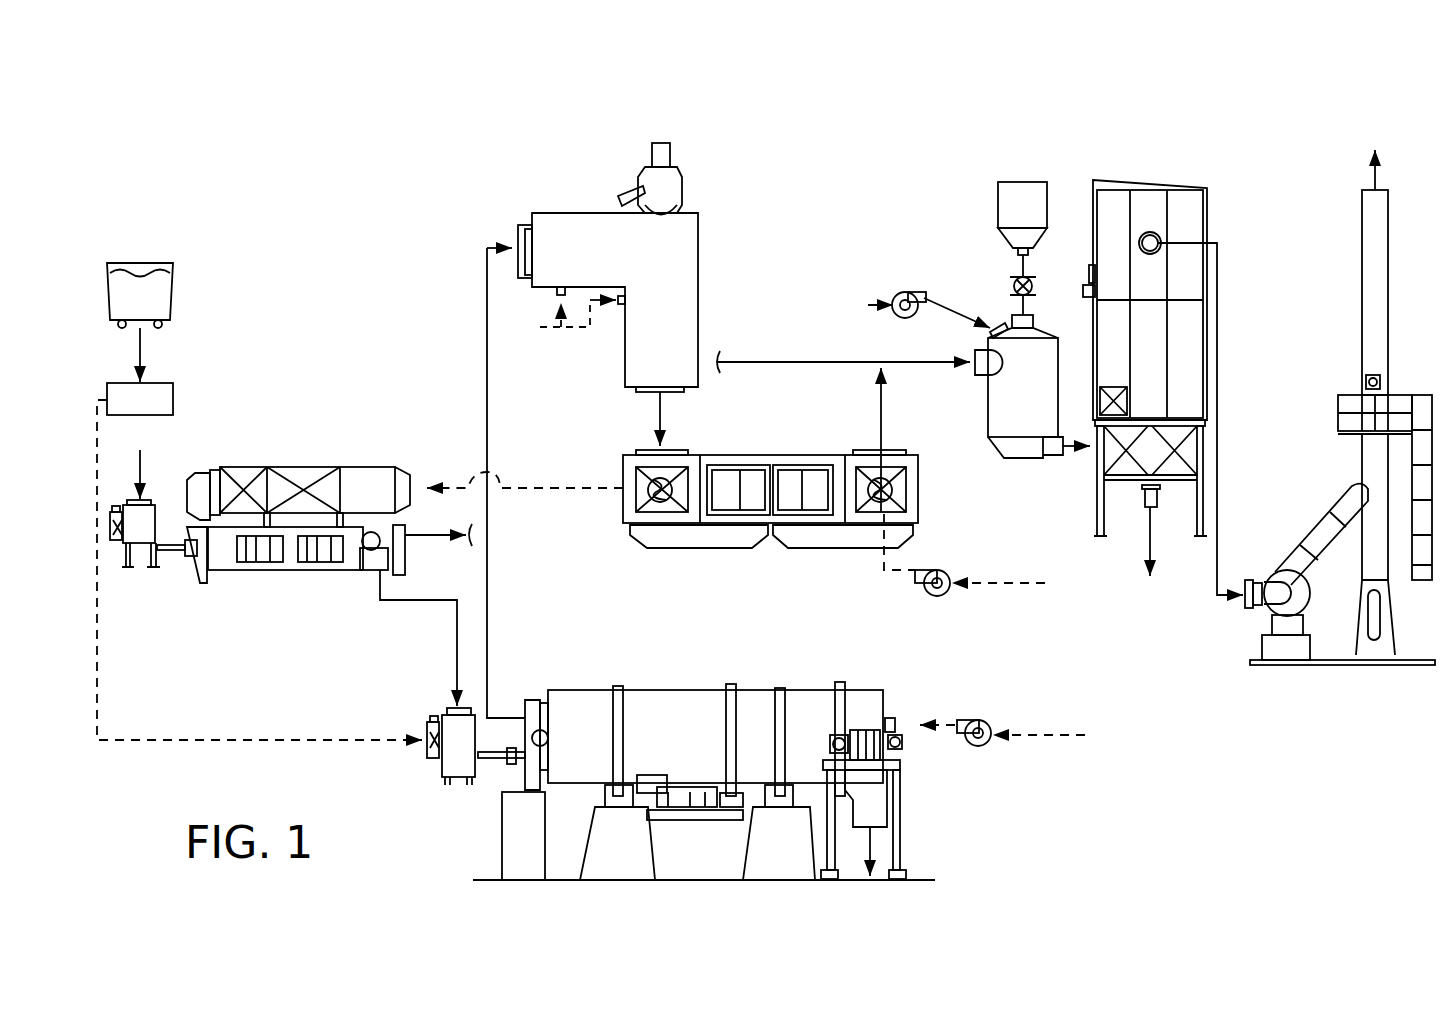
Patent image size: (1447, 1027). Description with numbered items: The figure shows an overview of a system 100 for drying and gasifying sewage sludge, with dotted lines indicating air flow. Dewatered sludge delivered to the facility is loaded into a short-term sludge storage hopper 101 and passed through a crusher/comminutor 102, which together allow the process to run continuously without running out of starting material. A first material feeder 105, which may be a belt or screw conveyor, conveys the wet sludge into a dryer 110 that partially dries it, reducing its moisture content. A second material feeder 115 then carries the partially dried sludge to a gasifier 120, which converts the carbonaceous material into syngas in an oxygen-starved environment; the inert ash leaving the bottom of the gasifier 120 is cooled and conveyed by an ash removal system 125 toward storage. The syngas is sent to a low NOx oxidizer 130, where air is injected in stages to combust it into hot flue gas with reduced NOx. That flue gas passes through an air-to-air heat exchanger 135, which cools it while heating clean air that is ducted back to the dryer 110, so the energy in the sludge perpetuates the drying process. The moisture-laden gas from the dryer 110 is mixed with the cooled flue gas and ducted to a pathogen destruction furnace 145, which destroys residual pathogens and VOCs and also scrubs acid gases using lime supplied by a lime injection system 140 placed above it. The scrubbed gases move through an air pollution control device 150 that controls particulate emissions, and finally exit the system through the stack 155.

The system 100 is at (260, 142).
The short-term sludge storage hopper 101 is at (173, 293).
The crusher/comminutor 102 is at (165, 398).
The first material feeder 105 is at (117, 545).
The dryer 110 is at (363, 469).
The second material feeder 115 is at (438, 728).
The gasifier 120 is at (748, 707).
The ash removal system 125 is at (886, 795).
The low NOx oxidizer 130 is at (684, 241).
The air-to-air heat exchanger 135 is at (912, 497).
The lime injection system 140 is at (1032, 190).
The pathogen destruction furnace 145 is at (988, 404).
The air pollution control device 150 is at (1188, 218).
The stack 155 is at (1350, 500).